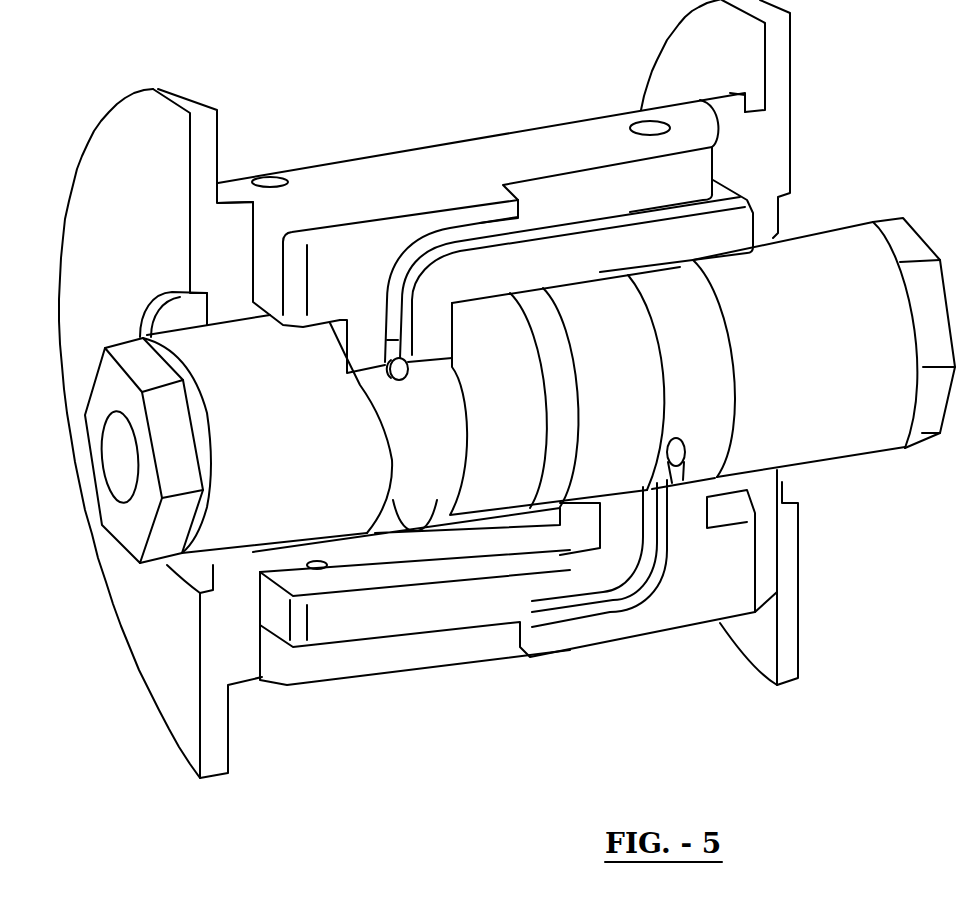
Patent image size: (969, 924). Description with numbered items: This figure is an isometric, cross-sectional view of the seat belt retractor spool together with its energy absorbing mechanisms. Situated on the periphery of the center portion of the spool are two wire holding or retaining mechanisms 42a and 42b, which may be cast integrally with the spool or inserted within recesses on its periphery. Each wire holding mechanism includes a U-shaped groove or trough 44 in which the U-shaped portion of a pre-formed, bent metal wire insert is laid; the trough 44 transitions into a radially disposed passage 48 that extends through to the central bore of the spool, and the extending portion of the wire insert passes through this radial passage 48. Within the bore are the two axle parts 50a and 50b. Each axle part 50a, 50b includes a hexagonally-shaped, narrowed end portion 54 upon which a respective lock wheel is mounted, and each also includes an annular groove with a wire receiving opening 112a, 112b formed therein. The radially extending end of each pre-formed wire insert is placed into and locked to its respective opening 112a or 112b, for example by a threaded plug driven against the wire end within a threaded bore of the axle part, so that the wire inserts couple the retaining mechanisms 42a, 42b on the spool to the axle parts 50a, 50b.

The wire holding or retaining mechanism 42a is at (380, 196).
The wire holding or retaining mechanism 42b is at (437, 668).
The U-shaped trough 44 is at (280, 652).
The radially disposed passage 48 is at (388, 298).
The axle part 50a is at (272, 478).
The axle part 50b is at (838, 342).
The hexagonally-shaped narrowed end portion 54 is at (140, 523).
The wire receiving opening 112a is at (393, 374).
The wire receiving opening 112b is at (683, 443).